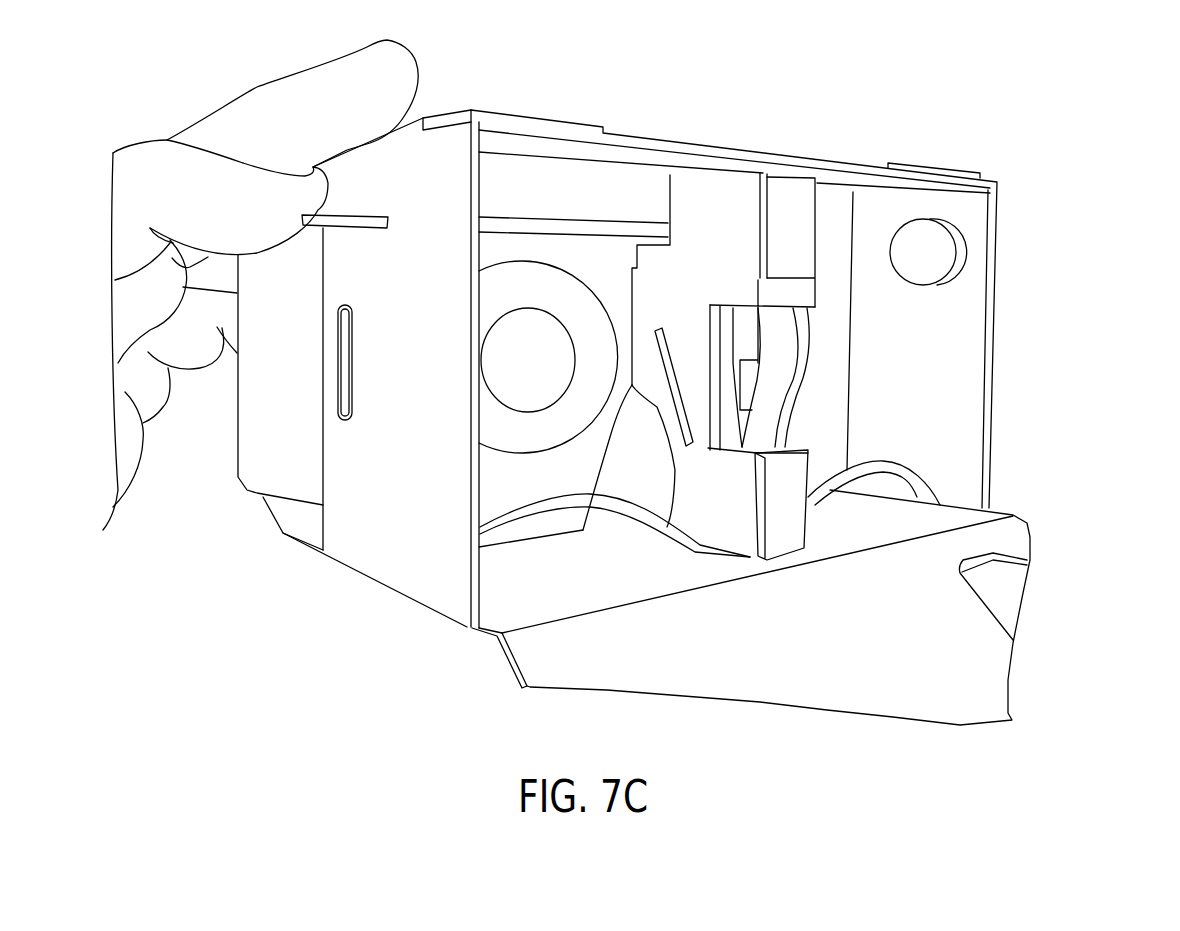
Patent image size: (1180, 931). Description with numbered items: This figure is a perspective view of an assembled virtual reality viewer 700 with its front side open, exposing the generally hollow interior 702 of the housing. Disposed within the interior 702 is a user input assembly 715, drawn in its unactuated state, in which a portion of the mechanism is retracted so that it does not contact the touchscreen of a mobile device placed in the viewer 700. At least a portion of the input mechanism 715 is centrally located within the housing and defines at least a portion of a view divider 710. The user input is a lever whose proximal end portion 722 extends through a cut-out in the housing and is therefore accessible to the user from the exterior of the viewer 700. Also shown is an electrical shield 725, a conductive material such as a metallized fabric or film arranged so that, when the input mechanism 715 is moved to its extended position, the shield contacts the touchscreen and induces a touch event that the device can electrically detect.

The viewer 700 is at (1089, 152).
The interior 702 is at (942, 358).
The view divider 710 is at (733, 247).
The input mechanism 715 is at (592, 313).
The proximal end portion 722 is at (358, 229).
The electrical shield 725 is at (663, 522).